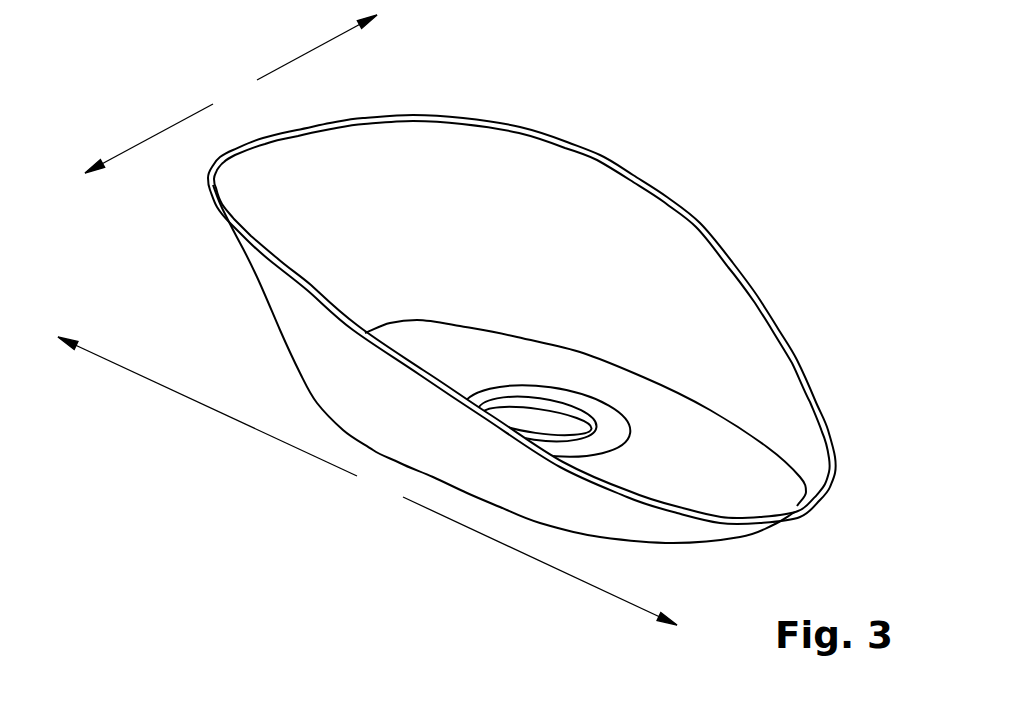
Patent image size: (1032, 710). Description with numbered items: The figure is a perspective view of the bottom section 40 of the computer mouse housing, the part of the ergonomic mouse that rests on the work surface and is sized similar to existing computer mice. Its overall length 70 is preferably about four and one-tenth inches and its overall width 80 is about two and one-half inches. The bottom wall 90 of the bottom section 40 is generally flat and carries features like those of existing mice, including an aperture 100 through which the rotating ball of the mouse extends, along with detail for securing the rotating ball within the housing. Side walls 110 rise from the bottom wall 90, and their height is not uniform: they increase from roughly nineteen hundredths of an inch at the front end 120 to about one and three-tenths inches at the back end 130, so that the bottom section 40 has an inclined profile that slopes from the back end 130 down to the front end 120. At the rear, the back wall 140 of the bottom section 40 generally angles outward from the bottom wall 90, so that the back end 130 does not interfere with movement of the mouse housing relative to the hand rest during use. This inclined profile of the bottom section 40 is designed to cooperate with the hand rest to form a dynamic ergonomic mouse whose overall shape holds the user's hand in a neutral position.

The bottom section 40 is at (638, 120).
The overall length 70 is at (367, 481).
The overall width 80 is at (231, 94).
The bottom wall 90 is at (687, 455).
The aperture 100 is at (570, 420).
The side walls 110 is at (645, 285).
The front end 120 is at (773, 525).
The back end 130 is at (388, 100).
The back wall 140 is at (228, 233).